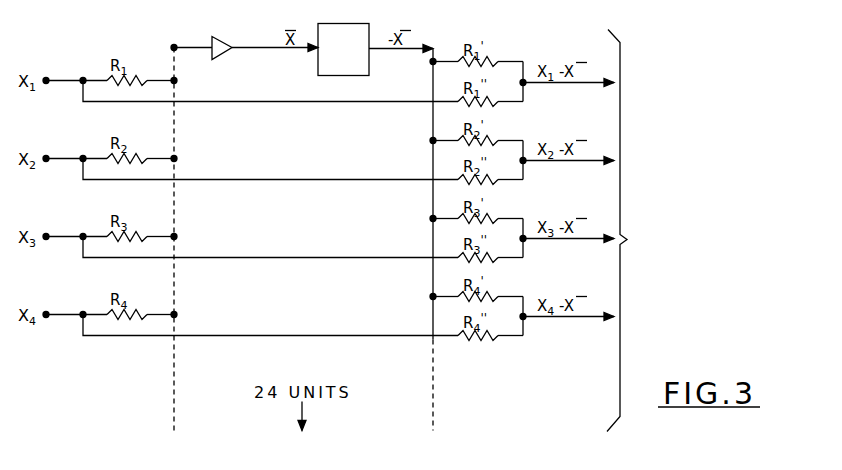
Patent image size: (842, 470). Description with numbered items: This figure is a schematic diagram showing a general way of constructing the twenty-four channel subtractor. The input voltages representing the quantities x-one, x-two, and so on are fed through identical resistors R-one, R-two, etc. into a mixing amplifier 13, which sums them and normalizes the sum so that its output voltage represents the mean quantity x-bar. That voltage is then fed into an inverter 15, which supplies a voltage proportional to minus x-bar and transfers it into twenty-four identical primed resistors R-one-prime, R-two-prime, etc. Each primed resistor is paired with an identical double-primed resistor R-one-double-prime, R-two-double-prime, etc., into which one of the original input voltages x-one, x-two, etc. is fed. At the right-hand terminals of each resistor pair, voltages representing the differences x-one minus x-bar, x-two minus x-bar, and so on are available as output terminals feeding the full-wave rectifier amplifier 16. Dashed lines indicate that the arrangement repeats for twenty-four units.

The mixing amplifier 13 is at (222, 57).
The inverter 15 is at (369, 64).
The full-wave rectifier amplifier 16 is at (713, 231).